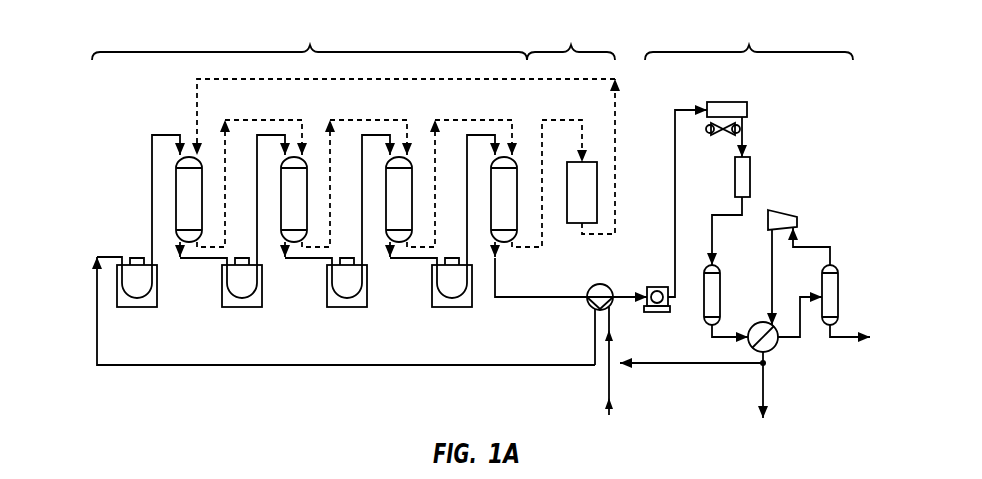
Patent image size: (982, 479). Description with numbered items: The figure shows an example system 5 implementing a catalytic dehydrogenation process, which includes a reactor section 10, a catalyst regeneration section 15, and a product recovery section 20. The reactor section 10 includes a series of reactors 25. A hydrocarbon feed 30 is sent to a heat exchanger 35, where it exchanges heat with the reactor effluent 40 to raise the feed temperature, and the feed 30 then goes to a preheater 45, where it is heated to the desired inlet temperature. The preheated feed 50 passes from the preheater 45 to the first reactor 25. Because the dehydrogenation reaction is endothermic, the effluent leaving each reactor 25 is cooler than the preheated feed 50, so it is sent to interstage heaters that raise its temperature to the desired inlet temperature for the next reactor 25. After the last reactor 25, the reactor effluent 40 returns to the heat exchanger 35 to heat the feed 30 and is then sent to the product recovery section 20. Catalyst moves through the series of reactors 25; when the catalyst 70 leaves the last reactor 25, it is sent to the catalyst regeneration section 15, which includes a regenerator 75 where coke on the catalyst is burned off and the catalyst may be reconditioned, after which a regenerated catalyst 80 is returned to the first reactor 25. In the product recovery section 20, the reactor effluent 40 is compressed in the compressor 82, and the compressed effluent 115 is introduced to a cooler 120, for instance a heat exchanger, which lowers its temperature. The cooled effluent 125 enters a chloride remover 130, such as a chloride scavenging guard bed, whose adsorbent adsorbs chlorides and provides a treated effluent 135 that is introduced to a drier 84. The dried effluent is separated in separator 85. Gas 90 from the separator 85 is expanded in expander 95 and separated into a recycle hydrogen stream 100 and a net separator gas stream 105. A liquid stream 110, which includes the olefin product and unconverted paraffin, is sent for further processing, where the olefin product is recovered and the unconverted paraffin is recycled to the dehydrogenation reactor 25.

The system 5 is at (95, 30).
The reactor section 10 is at (309, 37).
The catalyst regeneration section 15 is at (571, 36).
The product recovery section 20 is at (749, 37).
The reactor 25 is at (200, 210).
The hydrocarbon feed 30 is at (608, 378).
The heat exchanger 35 is at (606, 285).
The reactor effluent 40 is at (543, 299).
The preheater 45 is at (135, 307).
The preheated feed 50 is at (150, 216).
The catalyst 70 is at (560, 118).
The regenerator 75 is at (592, 203).
The regenerated catalyst 80 is at (618, 160).
The compressor 82 is at (657, 287).
The drier 84 is at (722, 292).
The separator 85 is at (840, 292).
The gas 90 is at (818, 246).
The expander 95 is at (789, 211).
The recycle hydrogen stream 100 is at (700, 363).
The net separator gas stream 105 is at (766, 383).
The liquid stream 110 is at (842, 340).
The compressed effluent 115 is at (675, 216).
The cooler 120 is at (736, 102).
The cooled effluent 125 is at (742, 133).
The chloride remover 130 is at (735, 176).
The treated effluent 135 is at (727, 215).